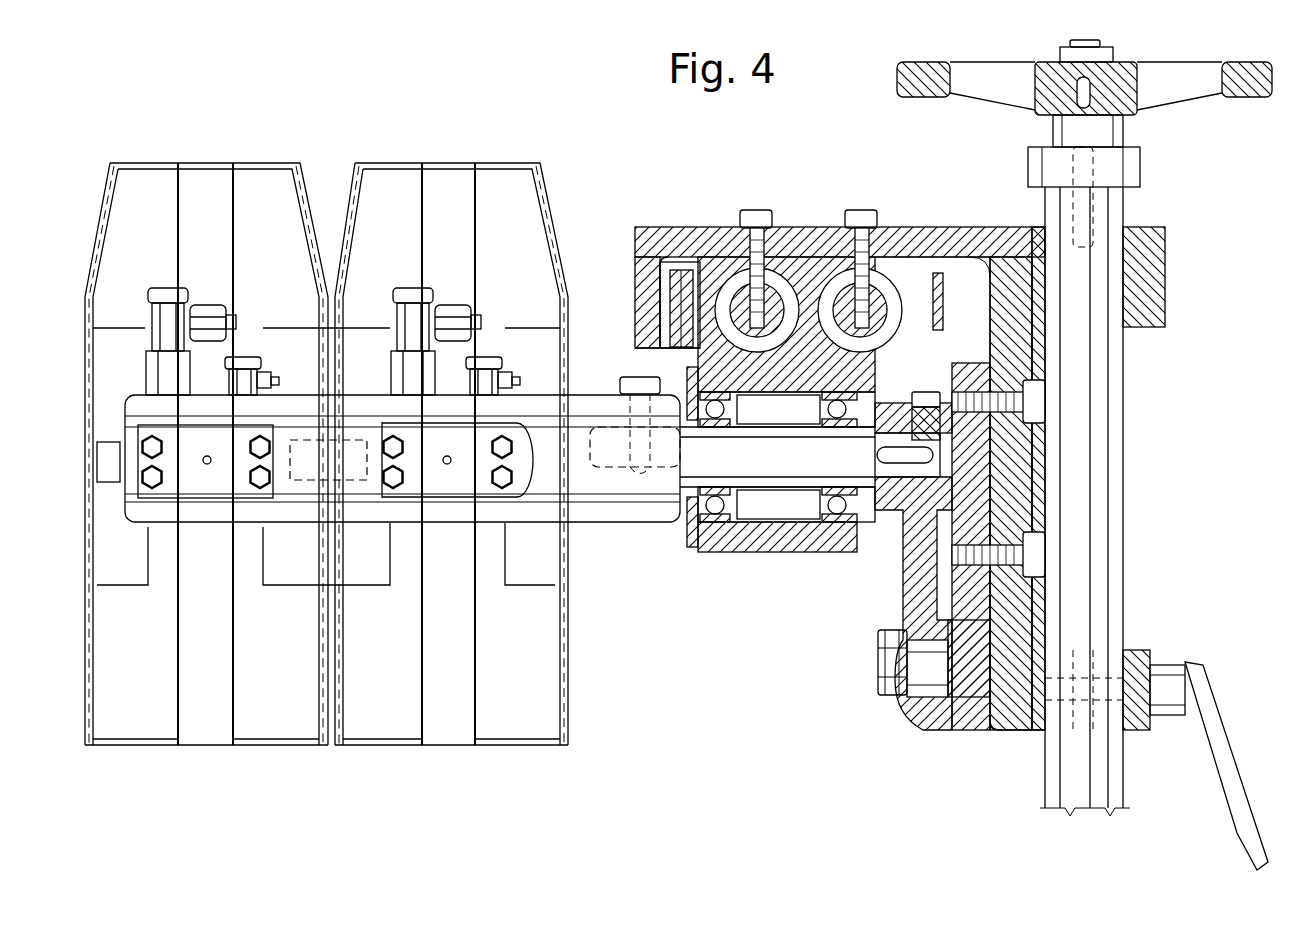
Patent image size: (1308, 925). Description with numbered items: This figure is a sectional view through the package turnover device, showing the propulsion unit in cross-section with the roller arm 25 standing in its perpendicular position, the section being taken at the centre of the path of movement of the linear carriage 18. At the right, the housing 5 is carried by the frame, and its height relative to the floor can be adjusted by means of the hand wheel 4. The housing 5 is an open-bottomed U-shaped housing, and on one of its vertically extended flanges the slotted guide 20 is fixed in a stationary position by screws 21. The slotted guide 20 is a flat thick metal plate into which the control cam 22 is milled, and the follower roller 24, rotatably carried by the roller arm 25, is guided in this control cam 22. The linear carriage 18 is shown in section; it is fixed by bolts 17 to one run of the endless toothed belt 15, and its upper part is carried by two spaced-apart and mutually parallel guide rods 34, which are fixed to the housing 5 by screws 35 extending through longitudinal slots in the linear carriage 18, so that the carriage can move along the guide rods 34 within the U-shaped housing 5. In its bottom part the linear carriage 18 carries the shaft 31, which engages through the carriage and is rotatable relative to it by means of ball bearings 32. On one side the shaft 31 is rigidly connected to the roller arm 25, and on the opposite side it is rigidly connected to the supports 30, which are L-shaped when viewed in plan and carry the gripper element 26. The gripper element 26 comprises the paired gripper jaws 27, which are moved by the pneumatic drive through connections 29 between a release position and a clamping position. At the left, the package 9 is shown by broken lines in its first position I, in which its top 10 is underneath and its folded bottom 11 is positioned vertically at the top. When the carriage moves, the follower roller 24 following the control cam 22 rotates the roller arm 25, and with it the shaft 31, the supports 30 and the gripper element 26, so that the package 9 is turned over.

The hand wheel 4 is at (1262, 78).
The housing 5 is at (633, 232).
The package 9 is at (215, 163).
The top 10 is at (193, 743).
The folded bottom 11 is at (255, 165).
The endless toothed belt 15 is at (943, 283).
The bolts 17 is at (660, 265).
The linear carriage 18 is at (710, 268).
The slotted guide 20 is at (975, 597).
The screws 21 is at (1050, 403).
The control cam 22 is at (978, 700).
The follower roller 24 is at (963, 662).
The roller arm 25 is at (873, 667).
The gripper element 26 is at (527, 523).
The gripper jaws 27 is at (113, 553).
The connections 29 is at (160, 370).
The supports 30 is at (147, 512).
The shaft 31 is at (713, 525).
The ball bearings 32 is at (827, 522).
The guide rods 34 is at (833, 300).
The screws 35 is at (745, 210).
The first position I is at (553, 170).